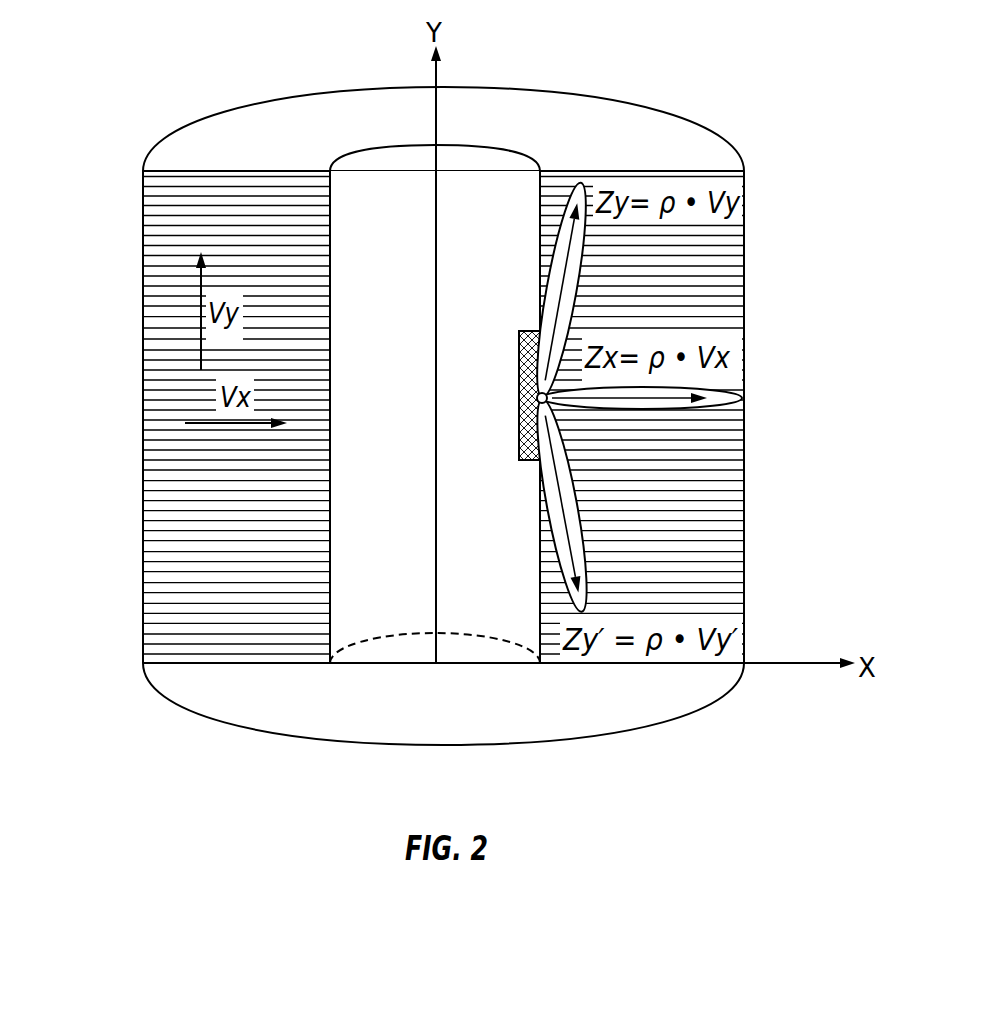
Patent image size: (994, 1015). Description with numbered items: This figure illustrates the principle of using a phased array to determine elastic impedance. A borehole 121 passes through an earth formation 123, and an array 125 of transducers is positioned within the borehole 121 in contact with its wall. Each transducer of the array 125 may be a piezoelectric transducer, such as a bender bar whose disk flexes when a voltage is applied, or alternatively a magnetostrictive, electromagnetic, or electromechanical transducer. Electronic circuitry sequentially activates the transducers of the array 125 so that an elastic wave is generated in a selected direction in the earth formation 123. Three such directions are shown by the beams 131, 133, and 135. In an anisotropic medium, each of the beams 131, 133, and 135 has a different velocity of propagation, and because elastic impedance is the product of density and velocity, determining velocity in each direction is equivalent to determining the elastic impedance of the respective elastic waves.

The borehole 121 is at (473, 614).
The earth formation 123 is at (163, 577).
The array of transducers 125 is at (519, 356).
The beam 131 is at (562, 265).
The beam 133 is at (742, 393).
The beam 135 is at (558, 525).